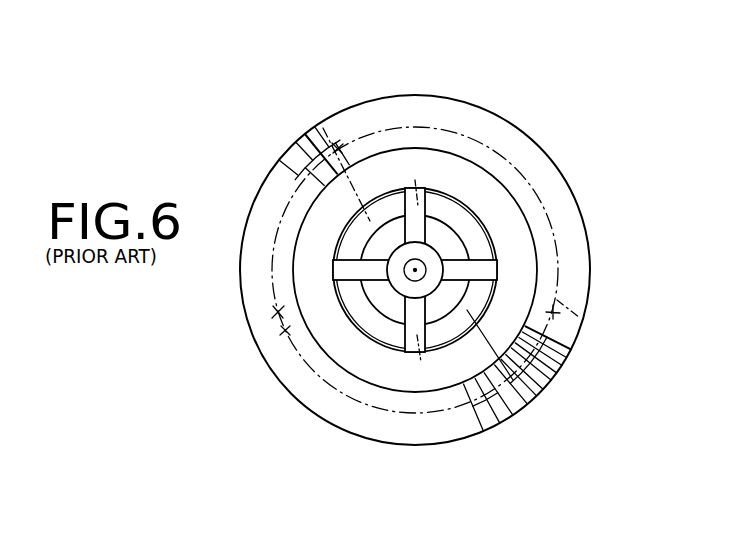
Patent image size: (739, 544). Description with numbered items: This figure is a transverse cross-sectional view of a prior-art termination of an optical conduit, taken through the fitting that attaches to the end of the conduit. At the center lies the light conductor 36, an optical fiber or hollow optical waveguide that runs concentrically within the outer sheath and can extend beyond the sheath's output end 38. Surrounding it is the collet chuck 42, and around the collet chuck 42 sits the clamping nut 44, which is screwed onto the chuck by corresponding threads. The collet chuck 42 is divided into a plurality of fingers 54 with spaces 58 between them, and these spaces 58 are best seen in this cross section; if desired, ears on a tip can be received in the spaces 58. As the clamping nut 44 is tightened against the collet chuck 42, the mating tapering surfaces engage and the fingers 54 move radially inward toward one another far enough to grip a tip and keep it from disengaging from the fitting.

The light conductor 36 is at (443, 217).
The output end 38 is at (400, 288).
The collet chuck 42 is at (355, 300).
The clamping nut 44 is at (302, 203).
The fingers 54 is at (580, 378).
The spaces 58 is at (417, 198).